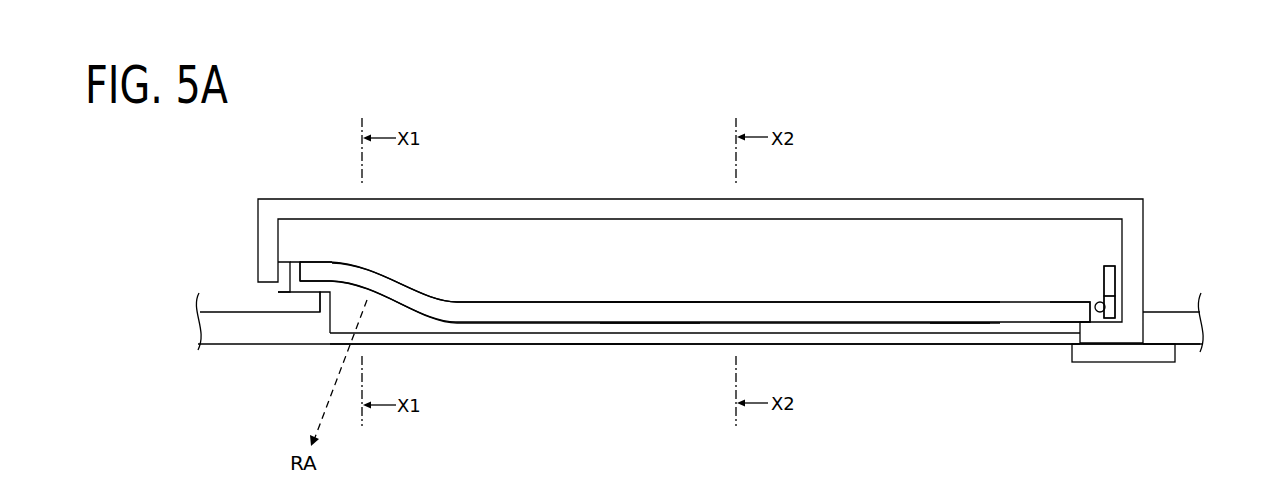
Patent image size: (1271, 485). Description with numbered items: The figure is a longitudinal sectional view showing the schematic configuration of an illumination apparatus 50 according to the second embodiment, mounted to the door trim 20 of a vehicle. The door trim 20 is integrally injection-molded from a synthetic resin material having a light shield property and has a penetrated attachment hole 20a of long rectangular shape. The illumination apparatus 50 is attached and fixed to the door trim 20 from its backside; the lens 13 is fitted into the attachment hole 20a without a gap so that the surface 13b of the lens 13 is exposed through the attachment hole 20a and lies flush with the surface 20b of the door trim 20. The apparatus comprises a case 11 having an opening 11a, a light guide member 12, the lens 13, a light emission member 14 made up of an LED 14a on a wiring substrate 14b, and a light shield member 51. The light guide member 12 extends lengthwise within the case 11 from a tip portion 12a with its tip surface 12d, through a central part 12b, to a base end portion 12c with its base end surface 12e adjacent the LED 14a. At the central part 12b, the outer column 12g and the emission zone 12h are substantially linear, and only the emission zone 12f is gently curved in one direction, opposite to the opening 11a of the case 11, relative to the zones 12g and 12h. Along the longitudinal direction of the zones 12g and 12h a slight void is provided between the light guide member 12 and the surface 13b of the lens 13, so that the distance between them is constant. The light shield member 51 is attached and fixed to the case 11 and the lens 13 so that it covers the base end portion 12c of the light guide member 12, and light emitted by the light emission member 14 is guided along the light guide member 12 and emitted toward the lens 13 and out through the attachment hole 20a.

The case 11 is at (270, 199).
The opening 11a is at (283, 290).
The light guide member 12 is at (904, 323).
The tip portion 12a is at (348, 249).
The central part 12b is at (990, 259).
The base end portion 12c is at (1068, 301).
The tip surface 12d is at (307, 249).
The base end surface 12e is at (1098, 302).
The emission zone 12f is at (387, 279).
The outer column 12g is at (640, 301).
The emission zone 12h is at (960, 301).
The lens 13 is at (492, 345).
The surface 13b is at (612, 351).
The light emission member 14 is at (1208, 223).
The LED 14a is at (1103, 308).
The wiring substrate 14b is at (1115, 276).
The door trim 20 is at (253, 345).
The attachment hole 20a is at (328, 345).
The surface 20b is at (1157, 351).
The illumination apparatus 50 is at (1249, 114).
The light shield member 51 is at (1085, 363).